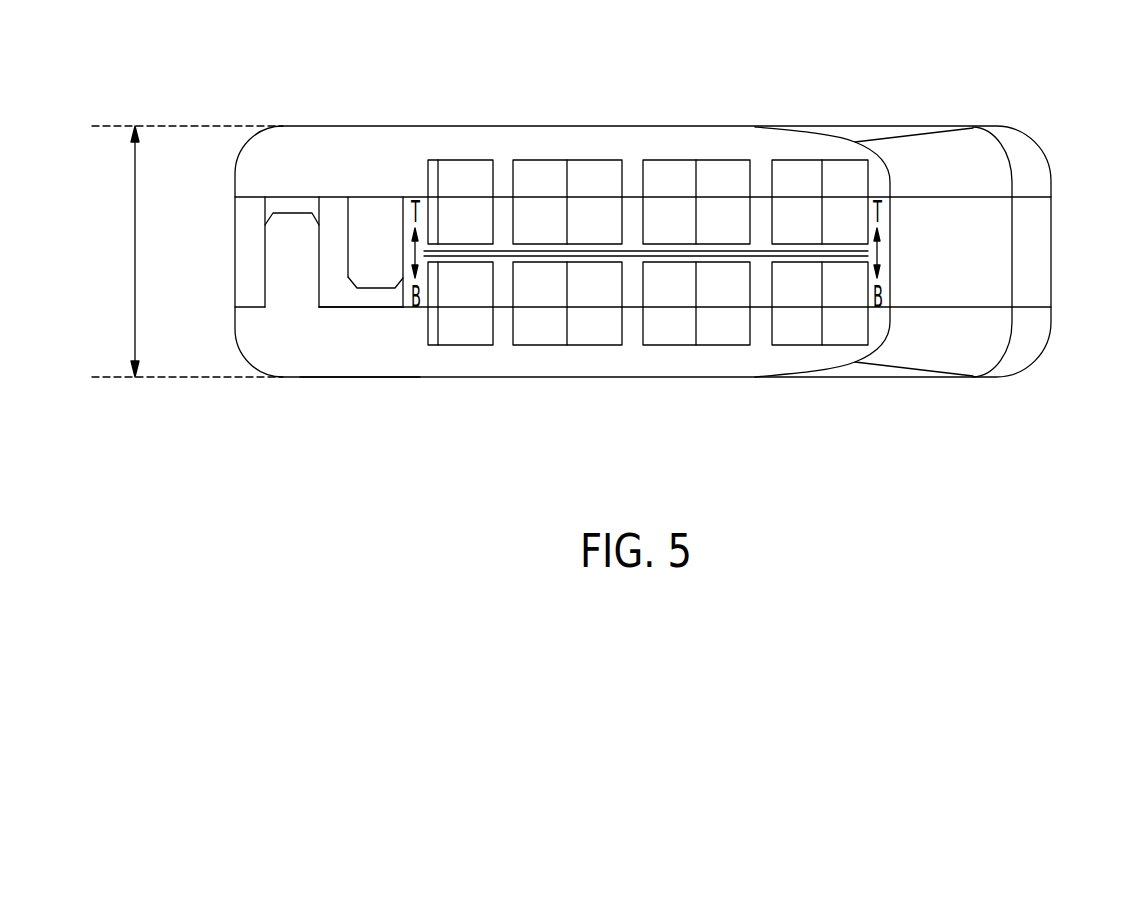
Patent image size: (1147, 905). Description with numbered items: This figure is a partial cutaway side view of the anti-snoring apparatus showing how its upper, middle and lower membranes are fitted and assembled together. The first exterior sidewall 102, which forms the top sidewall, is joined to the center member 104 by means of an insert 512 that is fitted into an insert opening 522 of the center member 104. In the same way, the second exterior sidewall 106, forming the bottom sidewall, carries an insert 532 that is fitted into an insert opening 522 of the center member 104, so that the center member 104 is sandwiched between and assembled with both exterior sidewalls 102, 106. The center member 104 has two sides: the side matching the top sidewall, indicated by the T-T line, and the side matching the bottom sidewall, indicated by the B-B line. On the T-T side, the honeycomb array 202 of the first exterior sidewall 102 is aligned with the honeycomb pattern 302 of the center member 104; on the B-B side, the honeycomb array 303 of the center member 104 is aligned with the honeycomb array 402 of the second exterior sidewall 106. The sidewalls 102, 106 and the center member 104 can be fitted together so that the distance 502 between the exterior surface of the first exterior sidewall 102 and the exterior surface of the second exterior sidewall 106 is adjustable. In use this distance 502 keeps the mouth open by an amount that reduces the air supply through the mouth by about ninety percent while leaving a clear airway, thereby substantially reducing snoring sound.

The first exterior sidewall 102 is at (315, 125).
The center member 104 is at (1003, 267).
The second exterior sidewall 106 is at (350, 377).
The honeycomb array 202 is at (602, 182).
The honeycomb pattern 302 is at (723, 215).
The honeycomb array 303 is at (600, 302).
The honeycomb array 402 is at (733, 332).
The distance 502 is at (133, 291).
The insert 512 is at (370, 263).
The insert opening 522 is at (292, 203).
The insert 532 is at (280, 273).